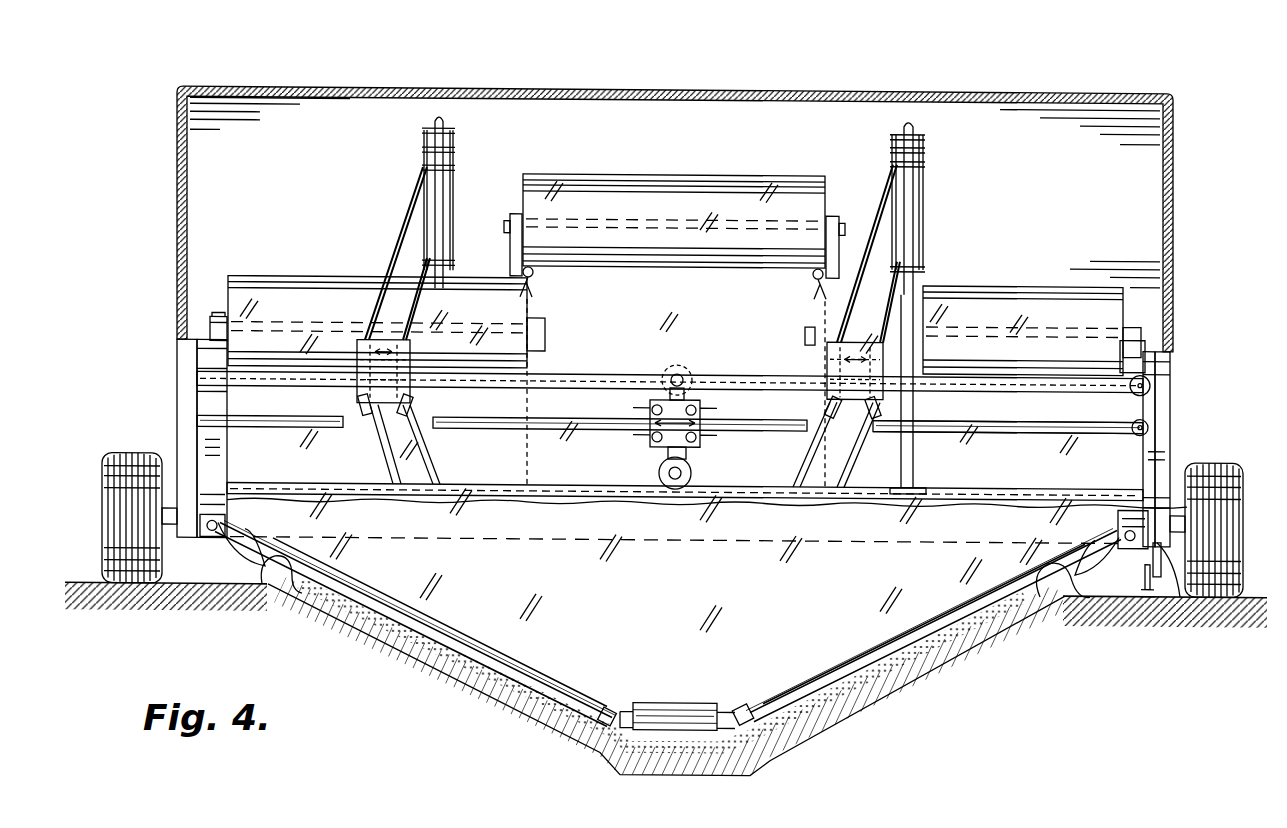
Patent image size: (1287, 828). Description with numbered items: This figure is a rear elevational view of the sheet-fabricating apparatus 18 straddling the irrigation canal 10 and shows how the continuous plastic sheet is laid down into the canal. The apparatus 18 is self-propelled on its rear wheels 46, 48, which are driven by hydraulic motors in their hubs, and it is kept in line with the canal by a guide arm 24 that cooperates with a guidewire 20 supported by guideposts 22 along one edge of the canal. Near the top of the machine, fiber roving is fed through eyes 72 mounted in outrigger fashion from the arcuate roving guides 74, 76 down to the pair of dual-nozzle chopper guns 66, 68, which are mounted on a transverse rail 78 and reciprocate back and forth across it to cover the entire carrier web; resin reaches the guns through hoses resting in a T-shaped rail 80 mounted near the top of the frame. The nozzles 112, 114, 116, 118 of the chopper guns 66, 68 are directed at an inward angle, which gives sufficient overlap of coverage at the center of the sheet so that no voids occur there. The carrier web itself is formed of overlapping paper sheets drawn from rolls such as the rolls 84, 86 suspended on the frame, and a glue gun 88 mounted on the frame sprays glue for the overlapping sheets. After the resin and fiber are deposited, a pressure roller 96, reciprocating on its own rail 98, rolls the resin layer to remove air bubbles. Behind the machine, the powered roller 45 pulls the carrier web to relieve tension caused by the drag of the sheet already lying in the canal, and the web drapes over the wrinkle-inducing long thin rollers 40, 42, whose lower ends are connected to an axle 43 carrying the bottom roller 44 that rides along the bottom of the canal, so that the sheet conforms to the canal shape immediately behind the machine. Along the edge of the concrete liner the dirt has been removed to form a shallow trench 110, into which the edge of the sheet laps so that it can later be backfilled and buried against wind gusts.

The irrigation canal 10 is at (277, 570).
The fabricating apparatus 18 is at (1175, 230).
The guidewire 20 is at (1150, 573).
The guideposts 22 is at (1148, 593).
The guide arm 24 is at (1180, 593).
The long thin roller 40 is at (813, 695).
The second long thin roller 42 is at (553, 681).
The axle 43 is at (740, 706).
The bottom roller 44 is at (690, 702).
The roller 45 is at (1135, 514).
The rear wheel 46 is at (1220, 461).
The rear wheel 48 is at (130, 456).
The chopper gun 66 is at (412, 344).
The chopper gun 68 is at (825, 348).
The eyes 72 is at (423, 170).
The arcuate roving guide 74 is at (433, 121).
The arcuate roving guide 76 is at (915, 121).
The rail 78 is at (1160, 388).
The T-shaped rail 80 is at (290, 280).
The roll 84 is at (723, 176).
The roll 86 is at (1028, 298).
The glue gun 88 is at (535, 275).
The pressure roller 96 is at (694, 470).
The rail 98 is at (1040, 432).
The trench 110 is at (1075, 597).
The nozzle 112 is at (360, 412).
The nozzle 114 is at (412, 408).
The nozzle 116 is at (820, 406).
The nozzle 118 is at (905, 410).